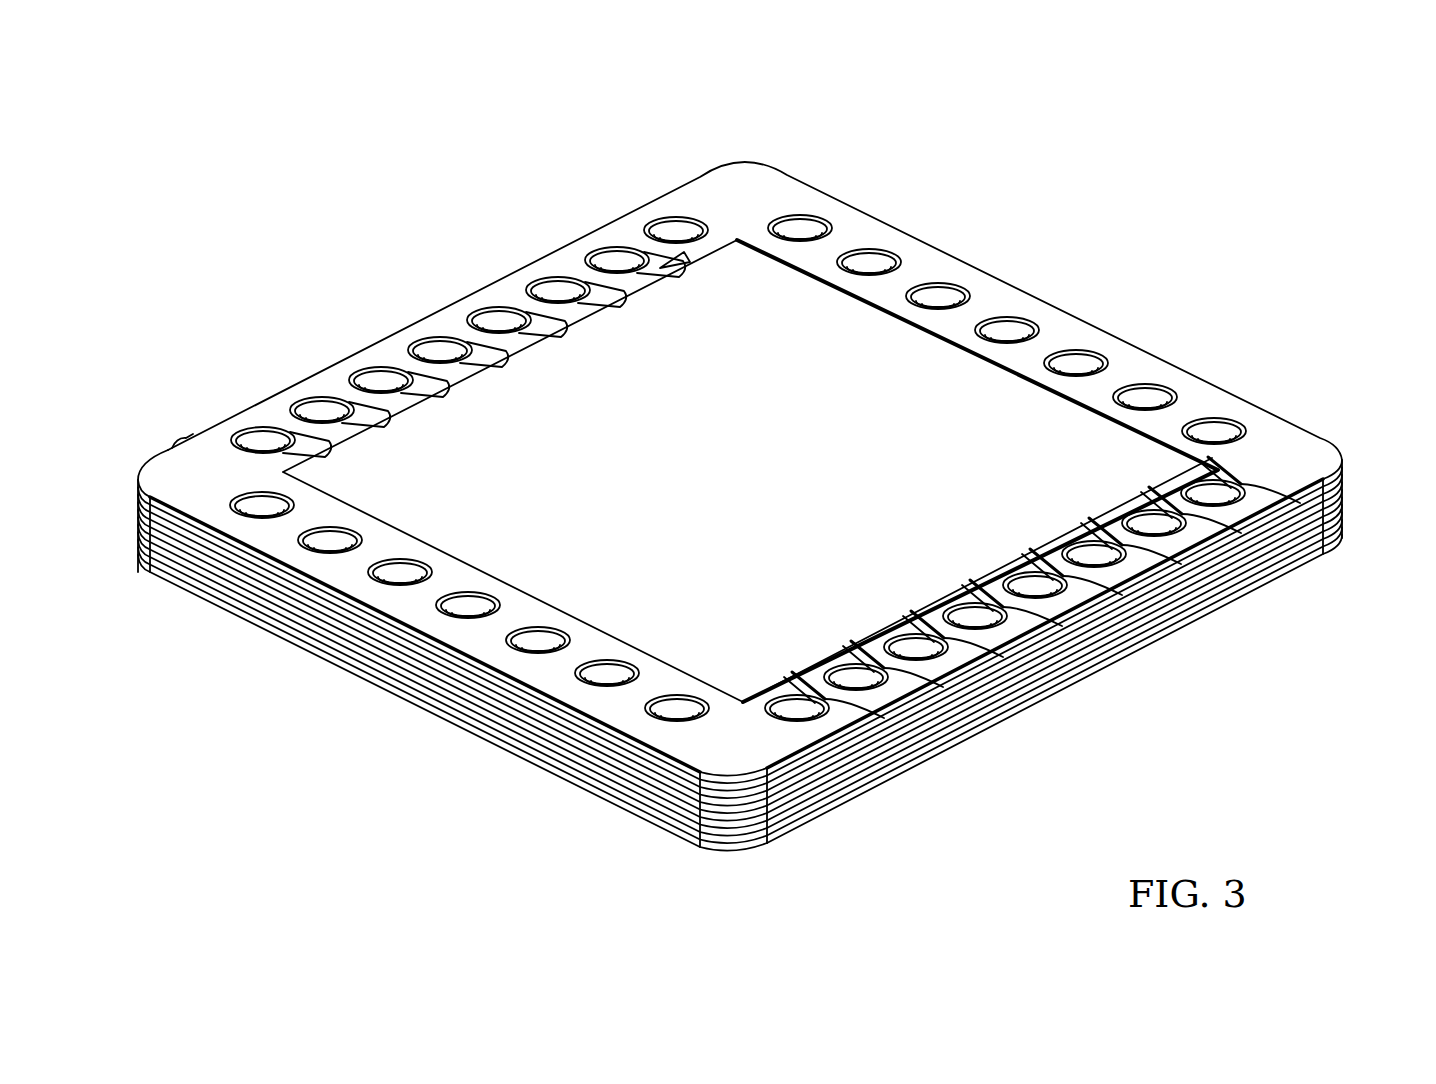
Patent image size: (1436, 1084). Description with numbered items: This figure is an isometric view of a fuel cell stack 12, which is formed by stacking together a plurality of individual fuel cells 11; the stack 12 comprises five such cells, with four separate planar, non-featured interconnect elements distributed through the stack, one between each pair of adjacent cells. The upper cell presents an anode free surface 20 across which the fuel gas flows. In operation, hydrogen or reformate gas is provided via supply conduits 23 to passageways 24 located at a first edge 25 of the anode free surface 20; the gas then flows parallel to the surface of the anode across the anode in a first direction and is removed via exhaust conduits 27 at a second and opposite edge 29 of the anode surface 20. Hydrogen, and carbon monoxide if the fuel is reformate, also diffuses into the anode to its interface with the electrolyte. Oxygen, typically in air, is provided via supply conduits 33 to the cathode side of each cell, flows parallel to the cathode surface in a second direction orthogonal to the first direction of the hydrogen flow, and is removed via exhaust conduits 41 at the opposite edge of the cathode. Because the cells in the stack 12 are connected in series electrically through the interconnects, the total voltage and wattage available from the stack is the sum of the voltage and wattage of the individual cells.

The stack 12 is at (1221, 143).
The fuel cells 11 is at (1348, 447).
The anode free surface 20 is at (702, 457).
The supply conduits 23 is at (1320, 537).
The passageways 24 is at (1103, 450).
The first edge 25 is at (1010, 567).
The exhaust conduits 27 is at (610, 250).
The second edge 29 is at (680, 255).
The supply conduits 33 is at (225, 548).
The exhaust conduits 41 is at (943, 300).